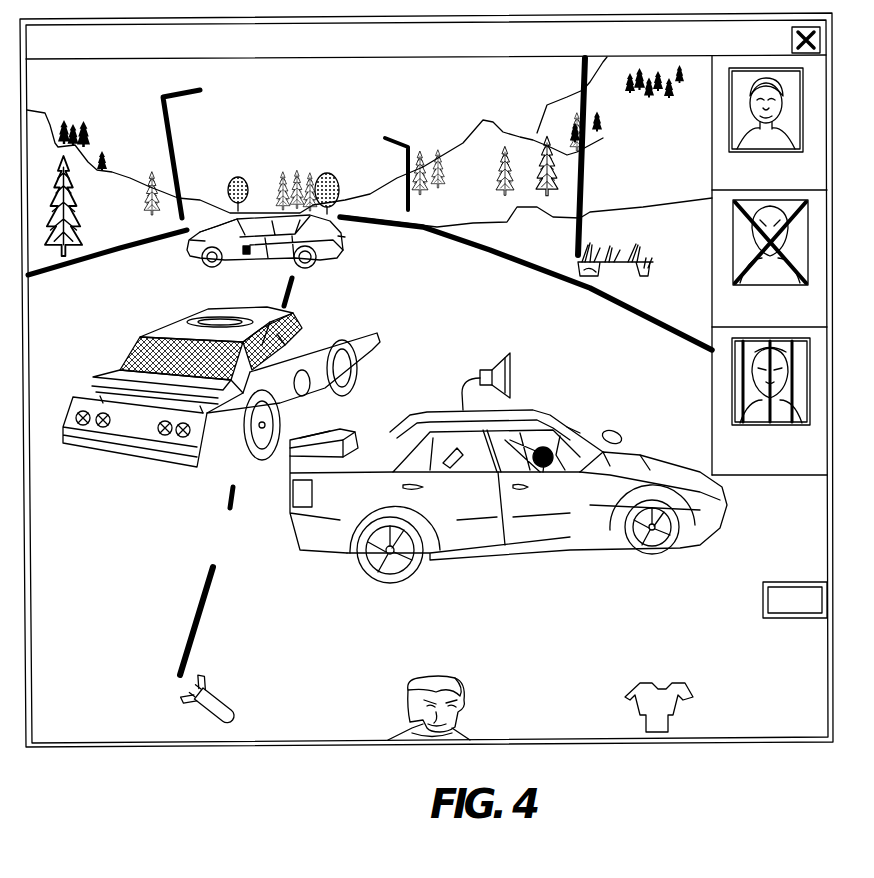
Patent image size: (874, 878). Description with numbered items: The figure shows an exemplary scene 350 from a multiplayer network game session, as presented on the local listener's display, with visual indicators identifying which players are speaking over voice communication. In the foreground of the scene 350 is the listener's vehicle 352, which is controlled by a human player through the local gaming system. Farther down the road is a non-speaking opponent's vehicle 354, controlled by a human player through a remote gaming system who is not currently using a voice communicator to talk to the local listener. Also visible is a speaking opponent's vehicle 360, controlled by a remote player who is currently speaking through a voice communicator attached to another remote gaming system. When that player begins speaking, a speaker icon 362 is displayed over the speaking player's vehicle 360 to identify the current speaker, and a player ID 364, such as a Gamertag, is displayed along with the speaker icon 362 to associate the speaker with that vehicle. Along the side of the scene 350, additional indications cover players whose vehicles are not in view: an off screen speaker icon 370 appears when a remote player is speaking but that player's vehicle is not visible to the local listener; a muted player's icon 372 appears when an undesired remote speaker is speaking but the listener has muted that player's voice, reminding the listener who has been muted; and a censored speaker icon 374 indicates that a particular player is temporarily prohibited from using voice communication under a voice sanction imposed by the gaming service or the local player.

The scene 350 is at (426, 384).
The listener's vehicle 352 is at (160, 326).
The non-speaking opponent's vehicle 354 is at (338, 233).
The speaking opponent's vehicle 360 is at (525, 553).
The speaker icon 362 is at (513, 367).
The player ID 364 is at (543, 337).
The off screen speaker icon 370 is at (712, 127).
The muted player's icon 372 is at (712, 283).
The censored speaker icon 374 is at (712, 368).